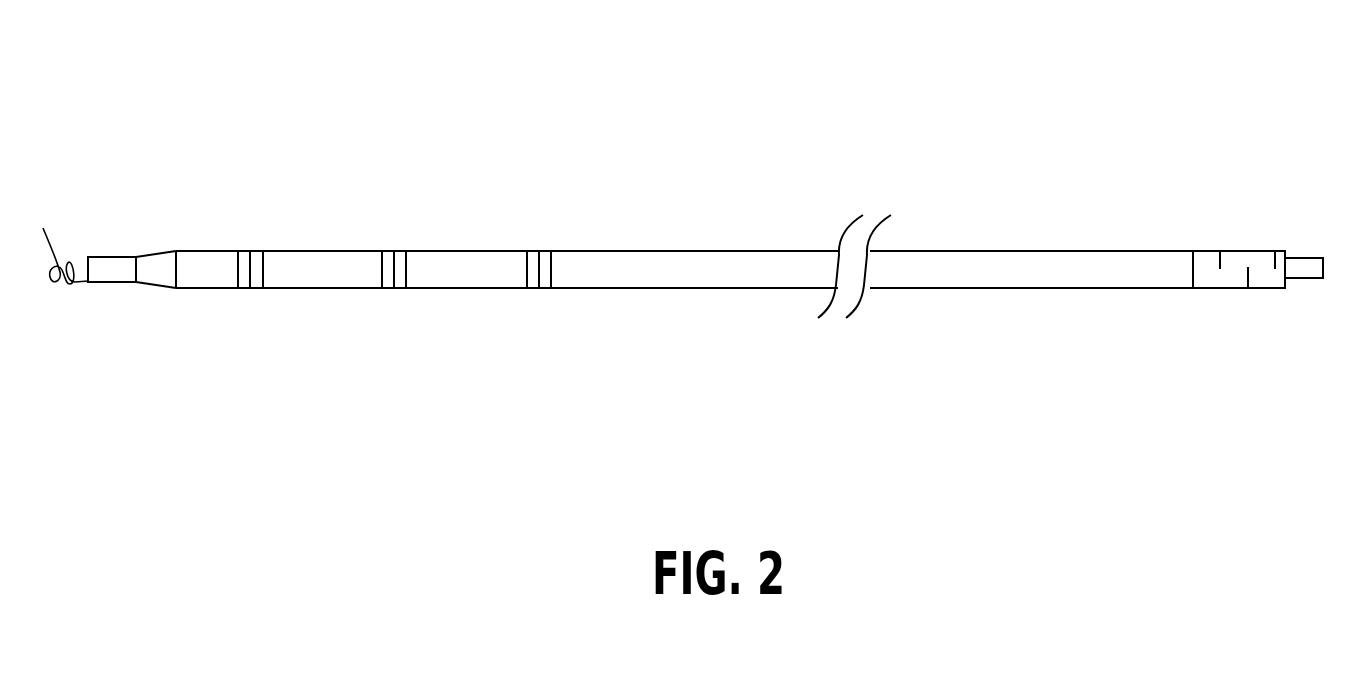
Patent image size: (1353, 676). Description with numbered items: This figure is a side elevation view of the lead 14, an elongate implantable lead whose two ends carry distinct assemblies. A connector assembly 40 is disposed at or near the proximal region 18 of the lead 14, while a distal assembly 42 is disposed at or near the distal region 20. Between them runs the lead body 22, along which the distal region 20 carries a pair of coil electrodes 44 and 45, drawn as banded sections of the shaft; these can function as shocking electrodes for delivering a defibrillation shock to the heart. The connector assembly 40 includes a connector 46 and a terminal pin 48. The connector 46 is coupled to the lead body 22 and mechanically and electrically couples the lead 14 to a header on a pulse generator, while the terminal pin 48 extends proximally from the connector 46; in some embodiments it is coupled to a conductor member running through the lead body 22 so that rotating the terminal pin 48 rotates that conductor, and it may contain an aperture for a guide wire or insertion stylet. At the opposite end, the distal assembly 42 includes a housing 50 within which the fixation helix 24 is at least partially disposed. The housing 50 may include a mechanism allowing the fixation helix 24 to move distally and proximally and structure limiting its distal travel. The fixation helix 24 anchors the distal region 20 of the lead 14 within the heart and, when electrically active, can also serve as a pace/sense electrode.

The lead 14 is at (694, 101).
The proximal region 18 is at (1106, 151).
The distal region 20 is at (255, 325).
The lead body 22 is at (732, 280).
The fixation helix 24 is at (60, 239).
The connector assembly 40 is at (1251, 304).
The distal assembly 42 is at (127, 229).
The coil electrode 44 is at (328, 258).
The coil electrode 45 is at (474, 258).
The connector 46 is at (1233, 250).
The terminal pin 48 is at (1305, 257).
The housing 50 is at (110, 279).